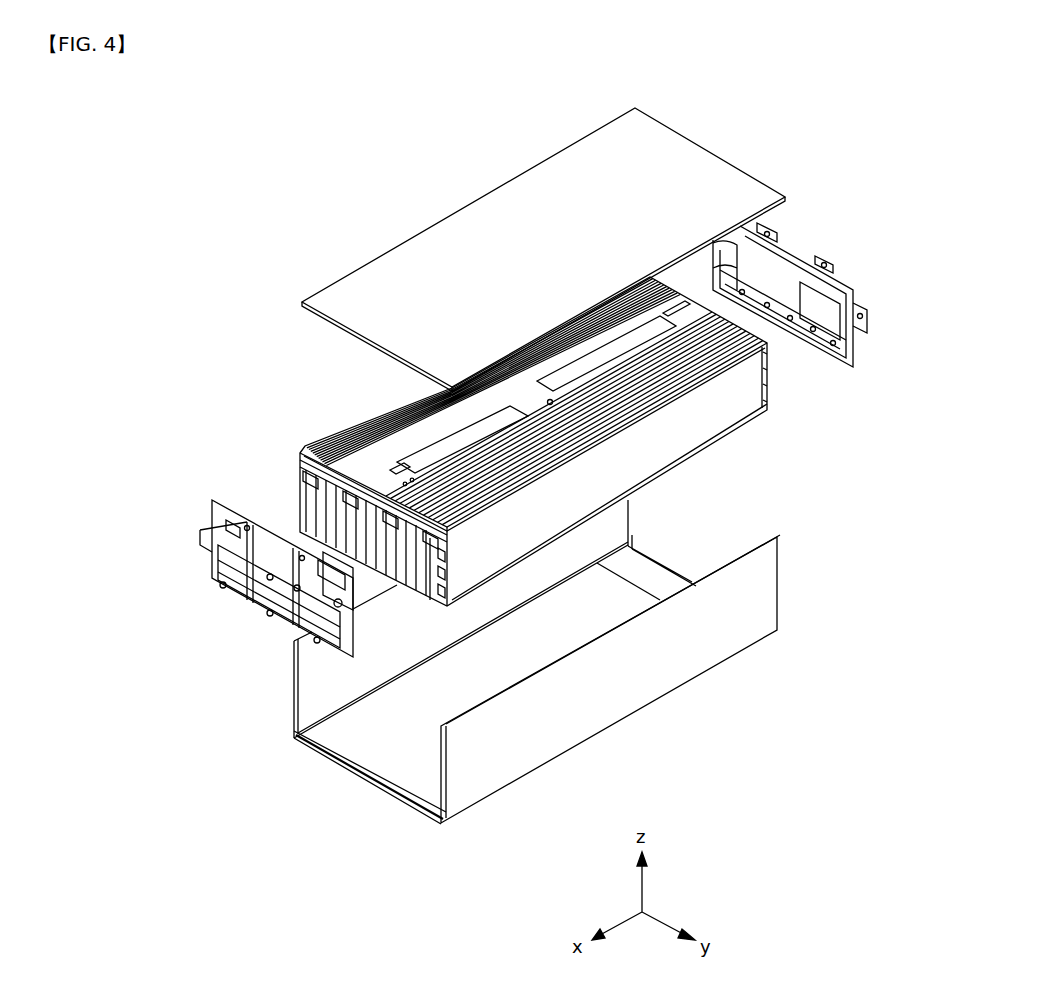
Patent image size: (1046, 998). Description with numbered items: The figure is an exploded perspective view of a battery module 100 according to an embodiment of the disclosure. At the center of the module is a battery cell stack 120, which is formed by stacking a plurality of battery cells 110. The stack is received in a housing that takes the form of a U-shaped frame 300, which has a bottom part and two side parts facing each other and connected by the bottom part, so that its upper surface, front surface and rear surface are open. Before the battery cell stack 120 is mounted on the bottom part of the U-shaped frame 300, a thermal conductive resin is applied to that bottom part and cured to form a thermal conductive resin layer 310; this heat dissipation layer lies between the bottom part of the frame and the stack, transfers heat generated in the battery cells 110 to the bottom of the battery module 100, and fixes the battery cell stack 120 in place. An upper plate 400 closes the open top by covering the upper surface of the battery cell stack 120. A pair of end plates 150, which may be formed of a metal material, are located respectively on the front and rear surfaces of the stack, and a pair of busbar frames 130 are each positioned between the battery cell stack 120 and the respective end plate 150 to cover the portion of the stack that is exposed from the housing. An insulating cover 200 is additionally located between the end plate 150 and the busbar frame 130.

The battery module 100 is at (382, 111).
The battery cell 110 is at (698, 433).
The battery cell stack 120 is at (348, 418).
The busbar frame 130 is at (284, 490).
The end plate 150 is at (238, 595).
The insulating cover 200 is at (805, 300).
The U-shaped frame 300 is at (642, 672).
The thermal conductive resin layer 310 is at (408, 738).
The upper plate 400 is at (512, 203).